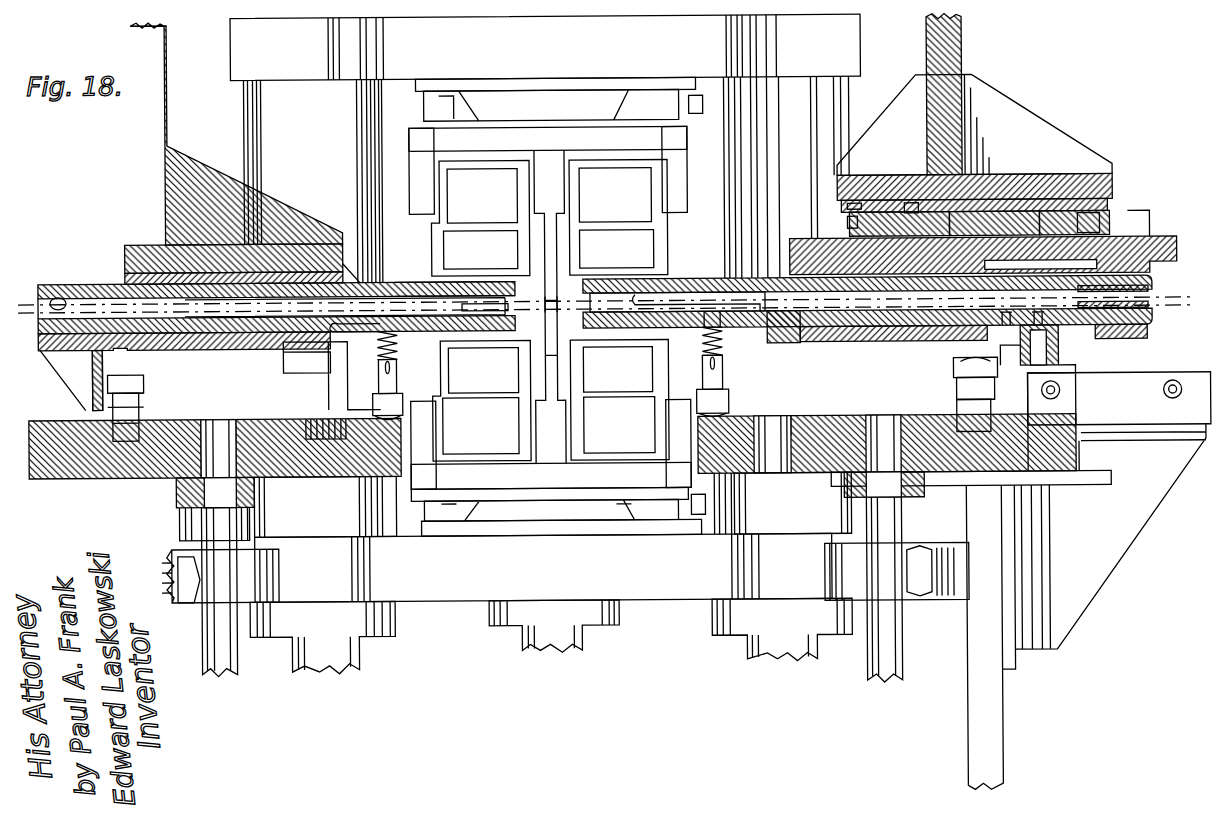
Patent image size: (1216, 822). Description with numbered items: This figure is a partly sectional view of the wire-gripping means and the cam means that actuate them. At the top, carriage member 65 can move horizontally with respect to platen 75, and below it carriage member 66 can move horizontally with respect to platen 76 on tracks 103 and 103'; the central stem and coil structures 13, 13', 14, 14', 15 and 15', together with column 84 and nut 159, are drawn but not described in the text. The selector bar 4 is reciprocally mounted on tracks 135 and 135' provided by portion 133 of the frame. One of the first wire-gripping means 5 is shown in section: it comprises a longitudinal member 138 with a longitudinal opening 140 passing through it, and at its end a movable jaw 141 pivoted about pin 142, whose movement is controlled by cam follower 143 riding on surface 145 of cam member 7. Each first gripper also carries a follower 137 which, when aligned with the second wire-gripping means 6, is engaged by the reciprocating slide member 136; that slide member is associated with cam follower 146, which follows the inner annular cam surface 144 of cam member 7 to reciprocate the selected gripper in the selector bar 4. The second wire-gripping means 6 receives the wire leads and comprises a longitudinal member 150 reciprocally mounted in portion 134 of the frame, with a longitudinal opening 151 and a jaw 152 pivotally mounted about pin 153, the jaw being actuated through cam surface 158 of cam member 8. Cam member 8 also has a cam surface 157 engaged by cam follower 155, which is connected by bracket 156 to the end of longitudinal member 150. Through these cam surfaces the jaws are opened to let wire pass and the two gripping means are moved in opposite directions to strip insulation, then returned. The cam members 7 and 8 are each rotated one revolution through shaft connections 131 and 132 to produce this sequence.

The selector bar 4 is at (1003, 228).
The first wire-gripping means 5 is at (748, 266).
The second wire-gripping means 6 is at (402, 283).
The cam member 7 is at (806, 456).
The cam member 8 is at (320, 466).
The center stem 13 is at (568, 306).
The lower center stem 13' is at (574, 365).
The upper left coil 14 is at (480, 218).
The lower left coil 14' is at (481, 400).
The upper right coil 15 is at (618, 219).
The lower right coil 15' is at (616, 399).
The carriage member 65 is at (530, 146).
The carriage member 66 is at (556, 484).
The platen 75 is at (486, 88).
The platen 76 is at (488, 536).
The center column 84 is at (520, 640).
The track 103 is at (558, 511).
The track 103' is at (611, 505).
The shaft connection 131 is at (896, 644).
The shaft connection 132 is at (228, 664).
The frame portion 133 is at (983, 96).
The frame portion 134 is at (147, 168).
The track 135 is at (974, 187).
The track 135' is at (1072, 186).
The reciprocating slide member 136 is at (1076, 360).
The follower 137 is at (1058, 336).
The longitudinal member 138 is at (688, 280).
The longitudinal opening 140 is at (646, 296).
The movable jaw 141 is at (686, 324).
The pin 142 is at (762, 324).
The cam follower 143 is at (724, 378).
The inner annular cam surface 144 is at (775, 418).
The cam surface 145 is at (727, 414).
The cam follower 146 is at (963, 418).
The longitudinal member 150 is at (74, 280).
The longitudinal opening 151 is at (57, 296).
The jaw 152 is at (486, 322).
The pin 153 is at (355, 326).
The cam follower 155 is at (130, 422).
The bracket 156 is at (66, 370).
The cam surface 157 is at (322, 412).
The cam surface 158 is at (376, 405).
The left nut 159 is at (398, 412).